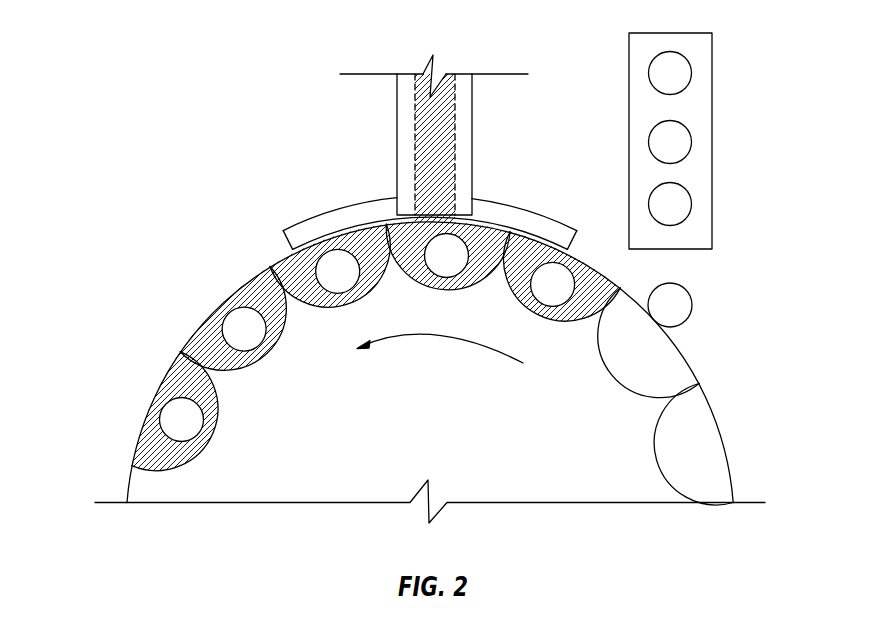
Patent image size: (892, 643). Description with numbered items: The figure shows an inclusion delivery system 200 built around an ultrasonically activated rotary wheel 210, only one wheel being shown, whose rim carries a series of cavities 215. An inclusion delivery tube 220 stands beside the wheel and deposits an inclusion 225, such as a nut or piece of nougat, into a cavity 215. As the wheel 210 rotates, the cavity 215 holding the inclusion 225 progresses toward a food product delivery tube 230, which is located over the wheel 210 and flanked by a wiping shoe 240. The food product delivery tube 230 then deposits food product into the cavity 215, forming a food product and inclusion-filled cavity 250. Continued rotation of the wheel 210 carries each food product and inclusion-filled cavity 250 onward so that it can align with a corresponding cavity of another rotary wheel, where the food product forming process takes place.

The inclusion delivery system 200 is at (140, 171).
The ultrasonically activated rotary wheel 210 is at (300, 480).
The cavity 215 is at (622, 288).
The inclusion delivery tube 220 is at (712, 97).
The inclusion 225 is at (696, 306).
The food product delivery tube 230 is at (440, 67).
The wiping shoe 240 is at (362, 208).
The food product and inclusion-filled cavity 250 is at (182, 413).